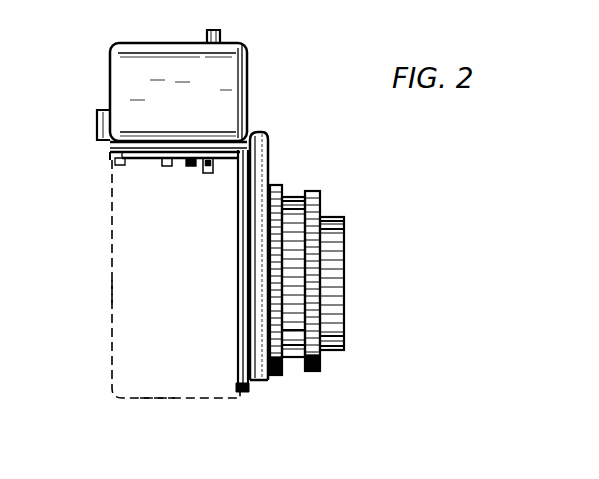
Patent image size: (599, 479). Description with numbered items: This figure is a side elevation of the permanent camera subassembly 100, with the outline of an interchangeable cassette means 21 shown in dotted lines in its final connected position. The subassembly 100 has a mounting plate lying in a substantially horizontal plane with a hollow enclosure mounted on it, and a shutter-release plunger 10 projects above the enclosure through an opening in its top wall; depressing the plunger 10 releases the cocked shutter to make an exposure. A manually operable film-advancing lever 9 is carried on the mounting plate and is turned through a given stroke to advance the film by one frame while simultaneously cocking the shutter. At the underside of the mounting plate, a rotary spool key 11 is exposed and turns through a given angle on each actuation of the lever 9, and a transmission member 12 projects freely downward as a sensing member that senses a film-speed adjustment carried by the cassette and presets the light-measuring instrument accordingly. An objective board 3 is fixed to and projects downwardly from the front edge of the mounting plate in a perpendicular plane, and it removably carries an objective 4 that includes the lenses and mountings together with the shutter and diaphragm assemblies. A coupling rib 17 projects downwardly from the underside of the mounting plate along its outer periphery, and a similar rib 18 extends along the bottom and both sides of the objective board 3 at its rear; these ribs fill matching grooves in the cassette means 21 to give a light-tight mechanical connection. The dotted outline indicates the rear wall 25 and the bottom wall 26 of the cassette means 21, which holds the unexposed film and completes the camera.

The permanent camera subassembly 100 is at (264, 104).
The shutter-release plunger 10 is at (224, 32).
The film-advancing lever 9 is at (97, 120).
The coupling structure rib 17 is at (115, 165).
The rotary spool key 11 is at (189, 163).
The transmission member 12 is at (207, 173).
The rib 18 is at (240, 385).
The objective board 3 is at (268, 152).
The objective 4 is at (324, 202).
The cassette means 21 is at (128, 337).
The rear wall 25 is at (111, 290).
The bottom wall 26 is at (157, 400).